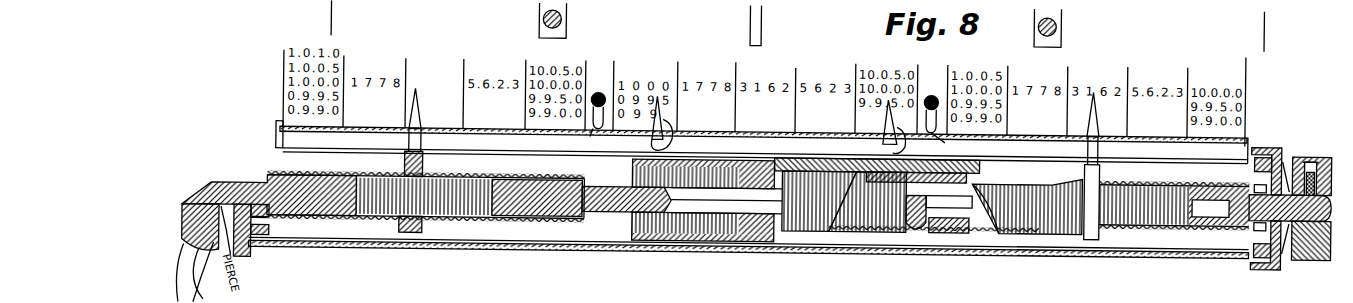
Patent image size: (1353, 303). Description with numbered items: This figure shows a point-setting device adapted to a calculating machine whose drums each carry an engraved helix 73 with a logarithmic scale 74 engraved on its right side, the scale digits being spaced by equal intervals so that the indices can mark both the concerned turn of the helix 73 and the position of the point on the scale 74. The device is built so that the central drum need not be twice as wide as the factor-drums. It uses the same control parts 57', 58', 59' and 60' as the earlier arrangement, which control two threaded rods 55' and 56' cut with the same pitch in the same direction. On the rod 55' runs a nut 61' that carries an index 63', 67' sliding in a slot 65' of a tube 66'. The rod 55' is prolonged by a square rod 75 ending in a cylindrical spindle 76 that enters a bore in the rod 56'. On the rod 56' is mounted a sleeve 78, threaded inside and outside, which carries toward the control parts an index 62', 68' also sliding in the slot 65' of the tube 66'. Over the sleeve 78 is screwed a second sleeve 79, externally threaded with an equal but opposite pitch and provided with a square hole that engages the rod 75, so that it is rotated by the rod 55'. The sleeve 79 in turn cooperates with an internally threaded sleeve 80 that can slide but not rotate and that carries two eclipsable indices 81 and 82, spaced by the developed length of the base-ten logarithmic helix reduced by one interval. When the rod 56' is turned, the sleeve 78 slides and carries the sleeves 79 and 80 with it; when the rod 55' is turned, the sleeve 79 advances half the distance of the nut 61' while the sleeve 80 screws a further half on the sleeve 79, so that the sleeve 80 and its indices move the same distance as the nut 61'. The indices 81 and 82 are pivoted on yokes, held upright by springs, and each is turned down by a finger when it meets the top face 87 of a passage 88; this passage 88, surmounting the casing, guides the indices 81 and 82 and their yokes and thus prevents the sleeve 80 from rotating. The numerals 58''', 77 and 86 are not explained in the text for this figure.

The threaded rod 55' is at (268, 220).
The threaded rod 56' is at (1214, 237).
The control part 57' is at (188, 240).
The control part 58' is at (1311, 223).
The support 58''' is at (1295, 30).
The control part 59' is at (244, 242).
The control part 60' is at (1285, 199).
The nut 61' is at (431, 192).
The index 62' is at (1110, 203).
The index 63' is at (764, 154).
The slot 65' is at (763, 142).
The tube 66' is at (748, 261).
The index 67' is at (430, 119).
The index 68' is at (1107, 129).
The helix 73 is at (405, 57).
The logarithmic scale 74 is at (433, 77).
The square rod 75 is at (623, 196).
The cylindrical spindle 76 is at (935, 227).
The key 77 is at (1228, 194).
The sleeve 78 is at (1060, 216).
The sleeve 79 is at (955, 232).
The sleeve 80 is at (718, 238).
The index 81 is at (663, 125).
The index 82 is at (886, 118).
The knob 86 is at (590, 133).
The top face 87 is at (938, 126).
The passage 88 is at (281, 140).